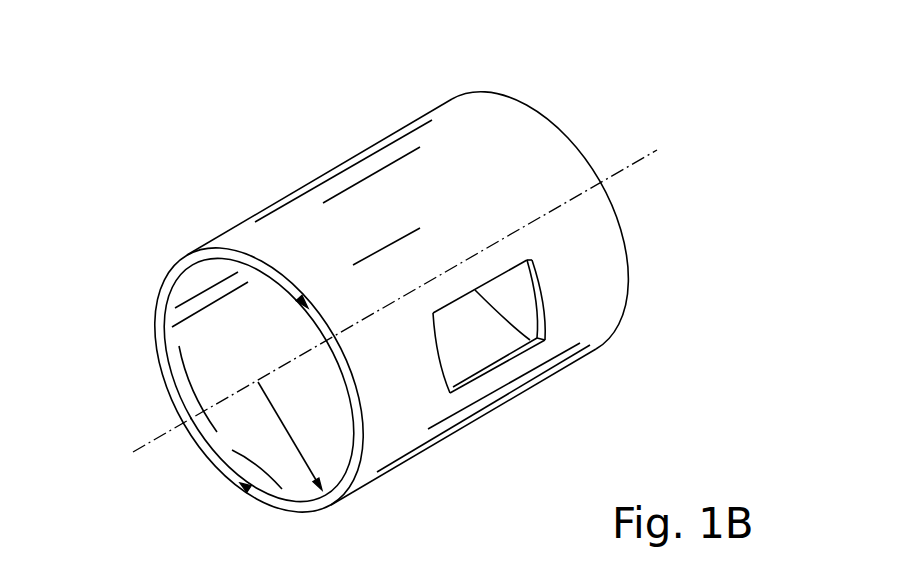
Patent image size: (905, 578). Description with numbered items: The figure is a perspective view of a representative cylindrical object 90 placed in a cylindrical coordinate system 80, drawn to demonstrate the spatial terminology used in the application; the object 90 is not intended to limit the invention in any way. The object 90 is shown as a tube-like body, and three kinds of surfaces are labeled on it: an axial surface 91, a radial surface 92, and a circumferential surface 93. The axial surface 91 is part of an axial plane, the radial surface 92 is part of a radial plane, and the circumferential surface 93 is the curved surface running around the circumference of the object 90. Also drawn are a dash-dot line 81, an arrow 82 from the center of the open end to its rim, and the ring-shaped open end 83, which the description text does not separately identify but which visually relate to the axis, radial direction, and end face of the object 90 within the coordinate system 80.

The cylindrical coordinate system 80 is at (572, 104).
The longitudinal axis 81 is at (145, 447).
The radius 82 is at (300, 441).
The open end ring 83 is at (162, 280).
The cylindrical object 90 is at (428, 88).
The axial surface 91 is at (511, 355).
The radial surface 92 is at (275, 500).
The circumferential surface 93 is at (367, 195).